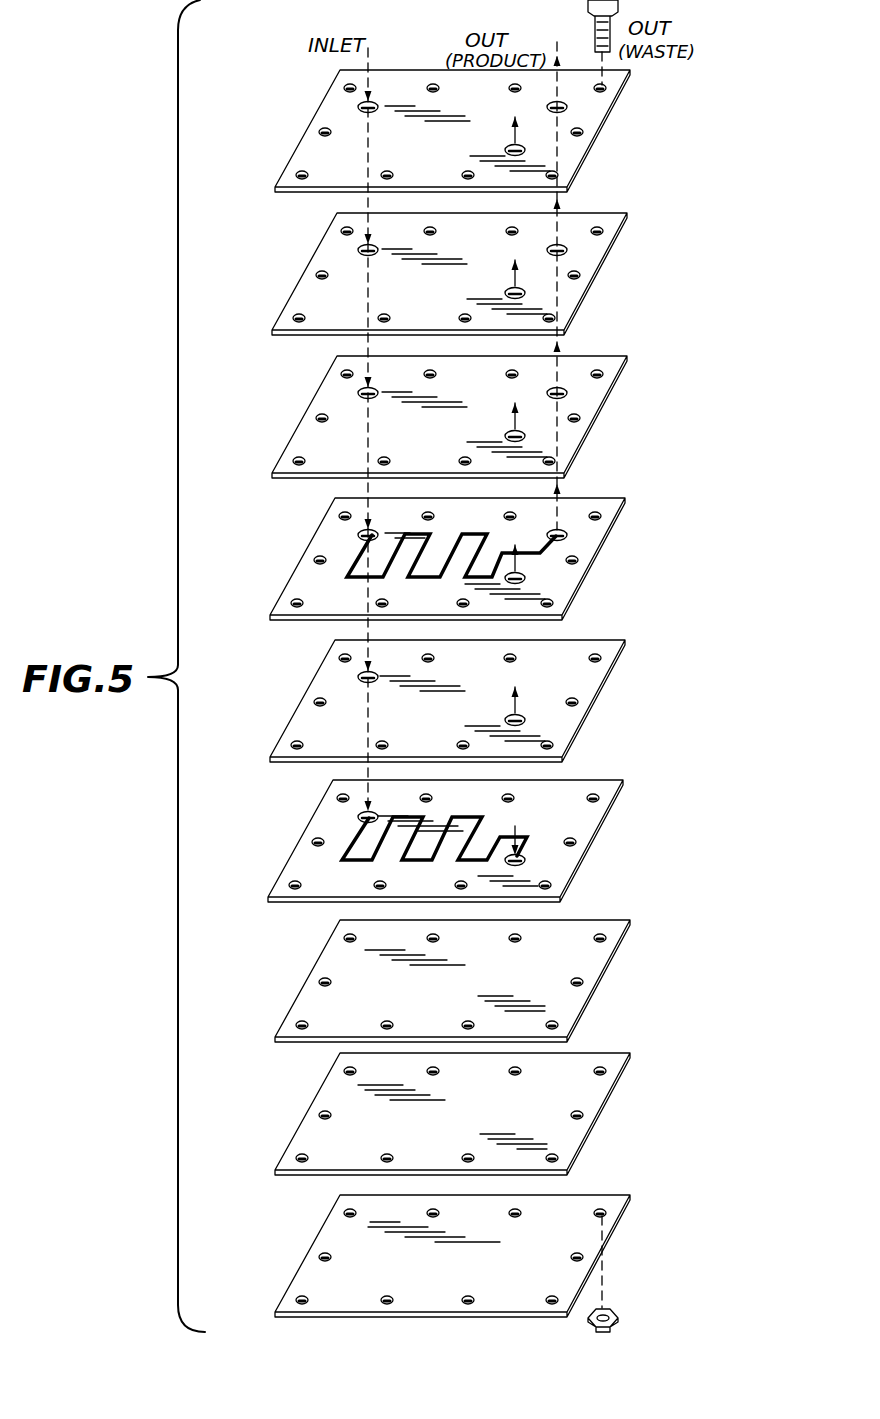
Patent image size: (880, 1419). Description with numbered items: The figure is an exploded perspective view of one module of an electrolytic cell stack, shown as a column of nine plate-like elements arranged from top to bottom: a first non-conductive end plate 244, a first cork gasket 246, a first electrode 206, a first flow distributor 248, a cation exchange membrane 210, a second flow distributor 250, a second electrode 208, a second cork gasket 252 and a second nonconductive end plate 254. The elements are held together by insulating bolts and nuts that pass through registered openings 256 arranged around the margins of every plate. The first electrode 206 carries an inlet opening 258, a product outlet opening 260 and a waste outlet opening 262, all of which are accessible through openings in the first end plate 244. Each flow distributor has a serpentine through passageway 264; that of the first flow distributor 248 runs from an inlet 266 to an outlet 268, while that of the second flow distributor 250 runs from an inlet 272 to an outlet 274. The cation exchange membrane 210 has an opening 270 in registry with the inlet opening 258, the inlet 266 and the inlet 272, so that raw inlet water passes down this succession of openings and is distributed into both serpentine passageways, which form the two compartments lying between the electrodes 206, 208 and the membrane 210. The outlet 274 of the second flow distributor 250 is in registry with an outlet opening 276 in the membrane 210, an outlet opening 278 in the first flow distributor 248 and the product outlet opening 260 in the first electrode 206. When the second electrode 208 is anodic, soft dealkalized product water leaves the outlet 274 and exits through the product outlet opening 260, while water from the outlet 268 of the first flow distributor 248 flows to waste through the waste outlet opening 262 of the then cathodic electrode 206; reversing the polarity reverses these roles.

The first non-conductive end plate 244 is at (612, 121).
The first cork gasket 246 is at (600, 249).
The first electrode 206 is at (479, 417).
The first flow distributor 248 is at (485, 547).
The cation exchange membrane 210 is at (460, 701).
The second flow distributor 250 is at (469, 841).
The second electrode 208 is at (595, 966).
The second cork gasket 252 is at (592, 1096).
The second nonconductive end plate 254 is at (605, 1229).
The registered openings 256 is at (606, 88).
The inlet opening 258 is at (373, 399).
The product outlet opening 260 is at (511, 433).
The waste outlet opening 262 is at (552, 394).
The serpentine through passageway 264 is at (494, 494).
The inlet of first flow distributor 266 is at (373, 530).
The outlet of first flow distributor 268 is at (566, 536).
The membrane inlet opening 270 is at (375, 683).
The inlet of second flow distributor 272 is at (359, 816).
The outlet of second flow distributor 274 is at (527, 861).
The membrane outlet opening 276 is at (507, 717).
The first flow distributor outlet opening 278 is at (522, 576).